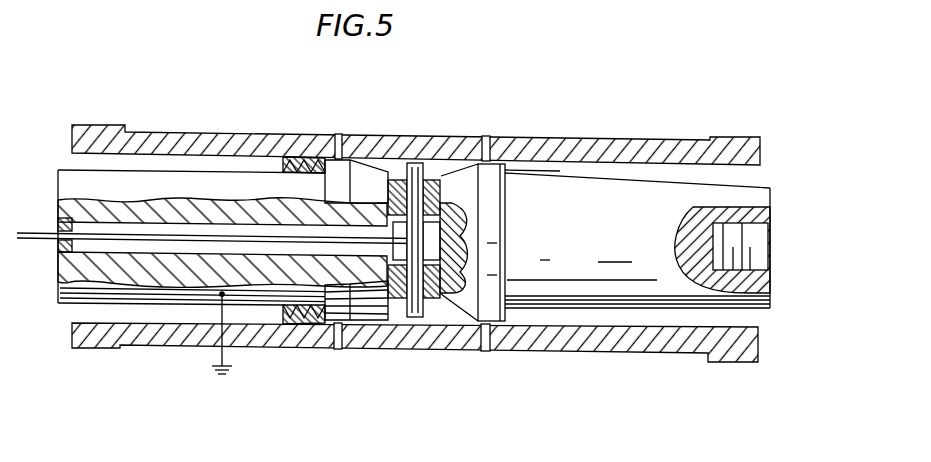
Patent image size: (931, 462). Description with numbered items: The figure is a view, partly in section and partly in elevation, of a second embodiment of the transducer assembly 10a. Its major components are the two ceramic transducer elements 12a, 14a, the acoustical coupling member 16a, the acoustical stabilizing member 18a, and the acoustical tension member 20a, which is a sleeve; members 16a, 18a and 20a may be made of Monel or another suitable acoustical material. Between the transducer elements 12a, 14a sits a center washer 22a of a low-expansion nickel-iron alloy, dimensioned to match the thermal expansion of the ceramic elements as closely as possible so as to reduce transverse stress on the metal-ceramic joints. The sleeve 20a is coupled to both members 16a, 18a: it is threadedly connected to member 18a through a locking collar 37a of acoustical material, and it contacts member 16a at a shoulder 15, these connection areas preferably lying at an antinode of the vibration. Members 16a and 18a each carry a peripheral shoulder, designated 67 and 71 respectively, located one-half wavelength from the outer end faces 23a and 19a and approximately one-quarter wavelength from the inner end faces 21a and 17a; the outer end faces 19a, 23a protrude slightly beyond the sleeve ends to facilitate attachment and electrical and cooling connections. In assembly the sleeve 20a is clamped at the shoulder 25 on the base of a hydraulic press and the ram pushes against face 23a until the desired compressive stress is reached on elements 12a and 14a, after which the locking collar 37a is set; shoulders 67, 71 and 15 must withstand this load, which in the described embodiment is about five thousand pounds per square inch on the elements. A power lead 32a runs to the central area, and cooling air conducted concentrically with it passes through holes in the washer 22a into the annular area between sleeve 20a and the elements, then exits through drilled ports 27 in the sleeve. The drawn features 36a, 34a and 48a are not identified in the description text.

The transducer assembly 10a is at (630, 122).
The shoulder 25 is at (130, 128).
The drilled ports 27 is at (339, 137).
The acoustical tension member 20a is at (267, 135).
The end face 23a is at (57, 177).
The power lead 32a is at (36, 232).
The acoustical stabilizing member 18a is at (174, 172).
The lower dielectric layer 36a is at (80, 255).
The outer conductor braid 34a is at (228, 363).
The locking collar 37a is at (304, 320).
The peripheral shoulder 67 is at (331, 170).
The inner end face 21a is at (391, 302).
The transducer element 12a is at (392, 179).
The transducer element 14a is at (438, 178).
The washer 22a is at (414, 165).
The inner end face 17a is at (438, 292).
The shoulder 15 is at (512, 168).
The peripheral shoulder 71 is at (494, 312).
The acoustical coupling member 16a is at (688, 186).
The end face 19a is at (771, 197).
The socket contact insulator 48a is at (768, 252).